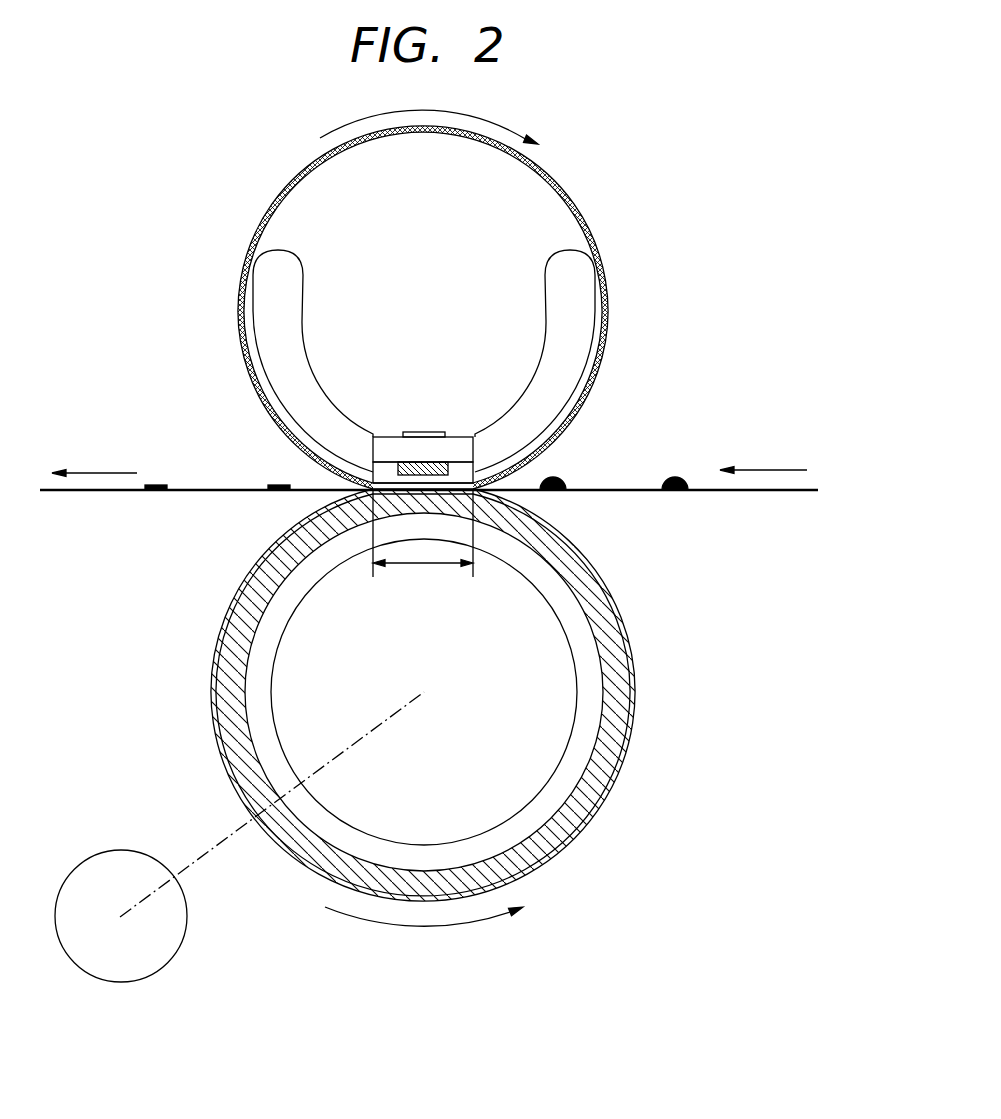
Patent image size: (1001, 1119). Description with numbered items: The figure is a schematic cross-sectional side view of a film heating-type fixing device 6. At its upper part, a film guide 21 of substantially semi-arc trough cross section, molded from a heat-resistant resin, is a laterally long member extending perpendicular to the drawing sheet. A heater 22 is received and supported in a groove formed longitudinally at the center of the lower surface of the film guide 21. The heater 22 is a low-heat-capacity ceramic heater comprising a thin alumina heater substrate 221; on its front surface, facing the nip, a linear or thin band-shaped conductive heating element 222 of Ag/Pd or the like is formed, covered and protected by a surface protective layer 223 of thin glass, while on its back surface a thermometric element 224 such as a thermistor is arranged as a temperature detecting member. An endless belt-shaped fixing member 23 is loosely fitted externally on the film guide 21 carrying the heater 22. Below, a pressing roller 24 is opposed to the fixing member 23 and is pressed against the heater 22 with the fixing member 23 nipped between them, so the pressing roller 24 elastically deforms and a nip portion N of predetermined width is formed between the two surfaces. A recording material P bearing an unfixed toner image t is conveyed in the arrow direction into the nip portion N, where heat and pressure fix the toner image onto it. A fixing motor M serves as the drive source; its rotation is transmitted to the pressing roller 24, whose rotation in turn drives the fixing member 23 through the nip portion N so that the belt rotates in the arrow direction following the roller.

The fixing device 6 is at (477, 518).
The film guide 21 is at (578, 327).
The heater 22 is at (406, 393).
The heater substrate 221 is at (453, 447).
The conductive heating element 222 is at (410, 463).
The surface protective layer 223 is at (387, 473).
The thermometric element 224 is at (423, 430).
The fixing member 23 is at (584, 218).
The pressing roller 24 is at (548, 728).
The recording material P is at (625, 489).
The unfixed toner image t is at (562, 480).
The nip portion N is at (423, 544).
The fixing motor M is at (239, 837).